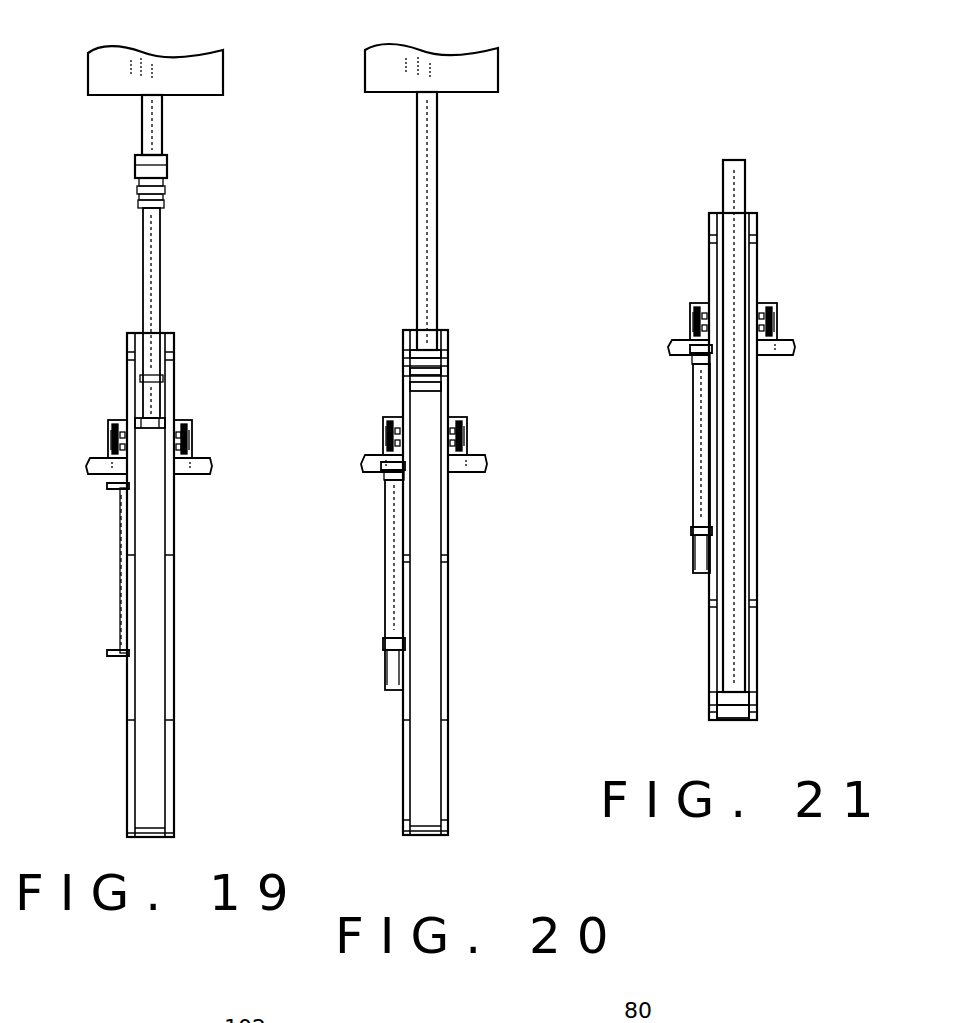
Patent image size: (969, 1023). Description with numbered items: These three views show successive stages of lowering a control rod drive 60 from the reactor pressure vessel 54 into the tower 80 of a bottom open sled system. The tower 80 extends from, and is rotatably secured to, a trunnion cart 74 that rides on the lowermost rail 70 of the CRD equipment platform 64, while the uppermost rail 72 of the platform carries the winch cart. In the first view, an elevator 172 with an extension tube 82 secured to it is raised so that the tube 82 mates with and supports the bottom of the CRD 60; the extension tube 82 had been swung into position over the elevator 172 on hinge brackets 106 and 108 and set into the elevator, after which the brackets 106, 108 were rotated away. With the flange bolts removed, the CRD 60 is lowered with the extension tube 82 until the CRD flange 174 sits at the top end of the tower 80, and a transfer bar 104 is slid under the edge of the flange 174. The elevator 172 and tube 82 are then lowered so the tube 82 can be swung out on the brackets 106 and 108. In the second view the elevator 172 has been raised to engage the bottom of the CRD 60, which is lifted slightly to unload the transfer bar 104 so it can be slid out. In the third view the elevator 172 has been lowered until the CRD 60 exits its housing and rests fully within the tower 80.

In FIG. 19, the reactor pressure vessel 54 is at (223, 71).
In FIG. 20, the reactor pressure vessel 54 is at (498, 71).
In FIG. 19, the control rod drive 60 is at (162, 135).
In FIG. 20, the control rod drive 60 is at (437, 212).
In FIG. 21, the control rod drive 60 is at (735, 470).
In FIG. 19, the CRD equipment platform 64 is at (195, 474).
In FIG. 20, the CRD equipment platform 64 is at (470, 472).
In FIG. 21, the CRD equipment platform 64 is at (780, 355).
In FIG. 19, the lowermost rail 70 is at (191, 445).
In FIG. 20, the lowermost rail 70 is at (467, 445).
In FIG. 21, the lowermost rail 70 is at (777, 329).
In FIG. 19, the uppermost rail 72 is at (183, 428).
In FIG. 20, the uppermost rail 72 is at (458, 420).
In FIG. 21, the uppermost rail 72 is at (768, 305).
In FIG. 19, the trunnion cart 74 is at (191, 435).
In FIG. 20, the trunnion cart 74 is at (467, 432).
In FIG. 21, the trunnion cart 74 is at (777, 316).
In FIG. 19, the tower 80 is at (176, 641).
In FIG. 20, the tower 80 is at (450, 606).
In FIG. 21, the tower 80 is at (758, 521).
In FIG. 19, the extension tube 82 is at (160, 266).
In FIG. 20, the extension tube 82 is at (385, 570).
In FIG. 21, the extension tube 82 is at (693, 452).
In FIG. 20, the transfer bar 104 is at (410, 371).
In FIG. 19, the hinge bracket 106 is at (112, 490).
In FIG. 20, the hinge bracket 106 is at (385, 480).
In FIG. 21, the hinge bracket 106 is at (692, 362).
In FIG. 19, the hinge bracket 108 is at (112, 657).
In FIG. 20, the hinge bracket 108 is at (383, 648).
In FIG. 21, the hinge bracket 108 is at (693, 536).
In FIG. 19, the elevator 172 is at (134, 420).
In FIG. 20, the elevator 172 is at (410, 388).
In FIG. 21, the elevator 172 is at (740, 714).
In FIG. 19, the CRD flange 174 is at (167, 162).
In FIG. 20, the CRD flange 174 is at (441, 352).
In FIG. 21, the CRD flange 174 is at (745, 700).